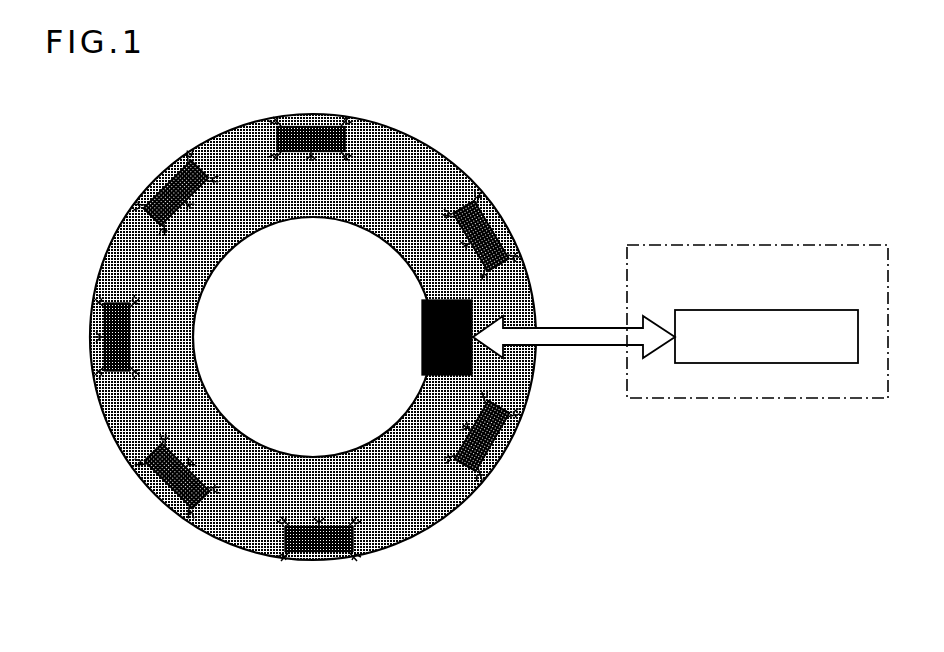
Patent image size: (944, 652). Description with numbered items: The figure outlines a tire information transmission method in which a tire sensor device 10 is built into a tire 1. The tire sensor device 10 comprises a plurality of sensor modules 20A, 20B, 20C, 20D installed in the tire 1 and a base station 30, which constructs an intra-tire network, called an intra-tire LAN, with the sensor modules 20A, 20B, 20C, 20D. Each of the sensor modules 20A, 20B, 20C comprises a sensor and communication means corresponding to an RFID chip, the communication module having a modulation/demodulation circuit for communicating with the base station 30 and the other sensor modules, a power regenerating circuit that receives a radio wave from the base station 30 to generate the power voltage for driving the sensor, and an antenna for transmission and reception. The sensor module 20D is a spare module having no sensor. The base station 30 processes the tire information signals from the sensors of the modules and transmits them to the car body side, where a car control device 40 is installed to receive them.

The tire 1 is at (388, 119).
The tire sensor device 10 is at (477, 148).
The sensor module 20A is at (492, 213).
The sensor module 20B is at (313, 114).
The sensor module 20C is at (167, 169).
The sensor module 20D is at (500, 442).
The base station 30 is at (533, 280).
The car control device 40 is at (743, 310).